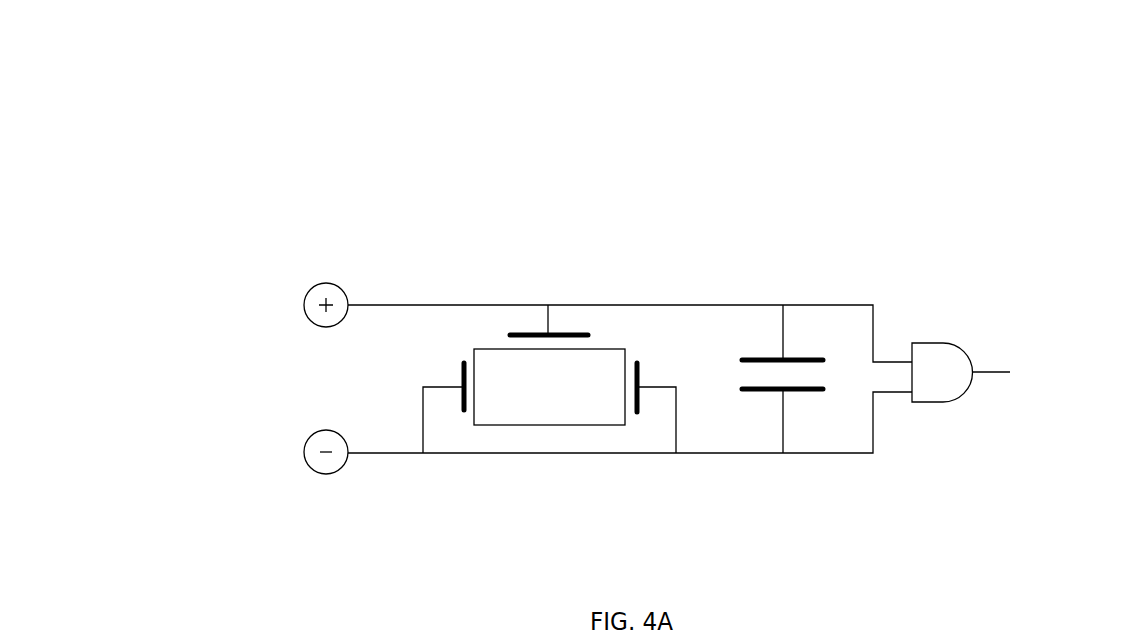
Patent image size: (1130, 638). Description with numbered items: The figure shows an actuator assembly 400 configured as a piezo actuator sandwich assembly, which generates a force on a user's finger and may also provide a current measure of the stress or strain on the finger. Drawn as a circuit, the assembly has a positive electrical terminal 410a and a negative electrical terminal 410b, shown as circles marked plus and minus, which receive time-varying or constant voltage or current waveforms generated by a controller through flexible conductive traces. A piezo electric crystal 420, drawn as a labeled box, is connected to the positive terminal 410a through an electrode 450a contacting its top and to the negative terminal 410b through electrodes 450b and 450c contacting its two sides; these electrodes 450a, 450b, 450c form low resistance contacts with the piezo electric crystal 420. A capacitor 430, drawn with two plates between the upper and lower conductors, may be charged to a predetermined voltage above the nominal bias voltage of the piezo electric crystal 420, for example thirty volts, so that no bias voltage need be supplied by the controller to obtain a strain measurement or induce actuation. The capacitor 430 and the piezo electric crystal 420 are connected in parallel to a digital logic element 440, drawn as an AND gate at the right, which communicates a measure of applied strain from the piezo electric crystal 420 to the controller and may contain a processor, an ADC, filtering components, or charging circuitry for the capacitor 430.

The actuator assembly 400 is at (80, 50).
The positive electrical terminal 410a is at (336, 286).
The negative electrical terminal 410b is at (339, 466).
The piezo electric crystal 420 is at (607, 349).
The capacitor 430 is at (806, 391).
The digital logic element 440 is at (936, 343).
The electrode 450a is at (520, 330).
The electrode 450b is at (462, 378).
The electrode 450c is at (638, 378).